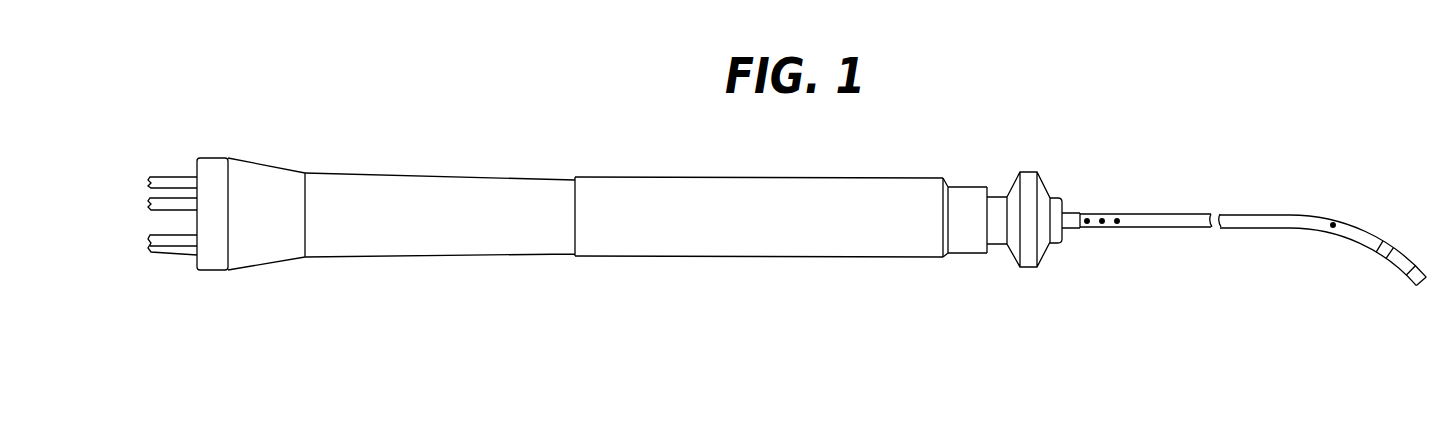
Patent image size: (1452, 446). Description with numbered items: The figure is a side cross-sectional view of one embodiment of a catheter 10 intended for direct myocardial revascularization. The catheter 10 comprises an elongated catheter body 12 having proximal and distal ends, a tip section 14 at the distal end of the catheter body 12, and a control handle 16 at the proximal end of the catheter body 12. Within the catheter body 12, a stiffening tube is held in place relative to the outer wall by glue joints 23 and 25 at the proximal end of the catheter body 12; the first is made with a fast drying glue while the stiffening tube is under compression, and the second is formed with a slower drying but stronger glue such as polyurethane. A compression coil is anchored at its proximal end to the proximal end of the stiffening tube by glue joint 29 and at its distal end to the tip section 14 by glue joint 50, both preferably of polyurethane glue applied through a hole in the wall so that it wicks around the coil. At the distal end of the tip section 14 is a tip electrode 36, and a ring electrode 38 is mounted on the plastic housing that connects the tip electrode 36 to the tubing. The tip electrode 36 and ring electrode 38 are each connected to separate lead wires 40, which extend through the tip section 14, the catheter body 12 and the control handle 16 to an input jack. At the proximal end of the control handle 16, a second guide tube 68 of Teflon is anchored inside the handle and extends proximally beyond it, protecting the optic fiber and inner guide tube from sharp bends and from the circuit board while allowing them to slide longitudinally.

The catheter 10 is at (884, 168).
The catheter body 12 is at (1157, 223).
The tip section 14 is at (1372, 238).
The control handle 16 is at (658, 197).
The glue joint 23 is at (1087, 220).
The glue joint 25 is at (1102, 221).
The glue joint 29 is at (1117, 221).
The tip electrode 36 is at (1421, 263).
The ring electrode 38 is at (1388, 252).
The lead wires 40 is at (168, 207).
The glue joint 50 is at (1333, 225).
The second guide tube 68 is at (168, 247).